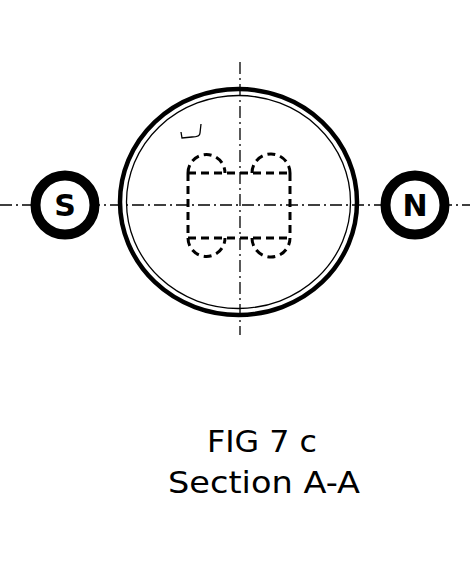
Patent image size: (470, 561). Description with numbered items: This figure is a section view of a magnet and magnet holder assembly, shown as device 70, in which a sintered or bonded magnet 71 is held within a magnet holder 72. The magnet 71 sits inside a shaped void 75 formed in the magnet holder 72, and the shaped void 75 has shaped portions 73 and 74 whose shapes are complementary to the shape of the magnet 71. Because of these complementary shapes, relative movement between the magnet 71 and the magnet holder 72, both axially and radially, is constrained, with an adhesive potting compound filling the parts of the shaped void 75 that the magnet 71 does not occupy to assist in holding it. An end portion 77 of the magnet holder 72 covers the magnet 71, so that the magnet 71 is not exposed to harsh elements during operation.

The device 70 is at (370, 110).
The magnet 71 is at (225, 220).
The magnet holder 72 is at (352, 165).
The shaped portion 73 is at (242, 172).
The shaped portion 74 is at (188, 195).
The shaped void 75 is at (208, 255).
The end portion 77 is at (190, 133).